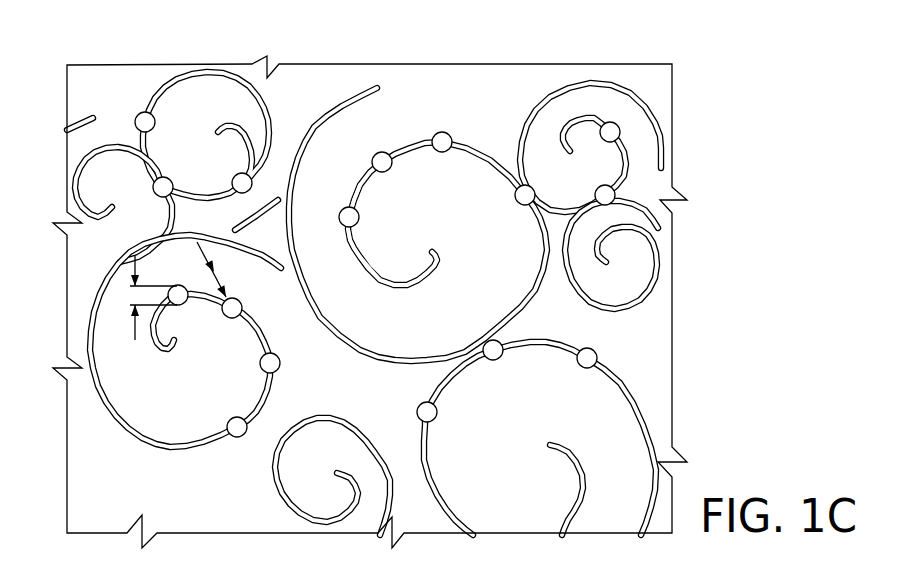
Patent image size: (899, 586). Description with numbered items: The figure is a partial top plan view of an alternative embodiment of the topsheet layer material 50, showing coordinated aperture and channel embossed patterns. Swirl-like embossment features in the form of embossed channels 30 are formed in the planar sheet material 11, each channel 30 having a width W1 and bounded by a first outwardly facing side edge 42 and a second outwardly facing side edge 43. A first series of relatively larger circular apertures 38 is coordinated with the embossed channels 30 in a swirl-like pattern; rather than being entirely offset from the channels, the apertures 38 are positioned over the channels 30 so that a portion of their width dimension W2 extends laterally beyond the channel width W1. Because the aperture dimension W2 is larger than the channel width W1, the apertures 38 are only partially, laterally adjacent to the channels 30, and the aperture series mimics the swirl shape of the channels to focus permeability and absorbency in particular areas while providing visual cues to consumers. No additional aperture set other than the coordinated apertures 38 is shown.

The planar sheet material 11 is at (392, 277).
The embossed channel 30 is at (313, 125).
The series of coordinated apertures 38 is at (442, 132).
The first outwardly facing side edge 42 is at (374, 232).
The second outwardly facing side edge 43 is at (337, 258).
The topsheet layer material 50 is at (672, 72).
The width of embossment feature W1 is at (190, 291).
The width dimension of apertures W2 is at (130, 286).